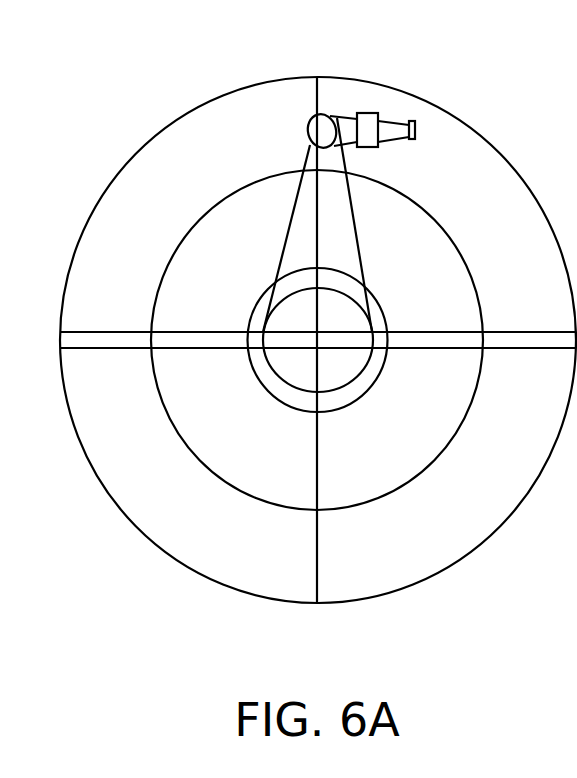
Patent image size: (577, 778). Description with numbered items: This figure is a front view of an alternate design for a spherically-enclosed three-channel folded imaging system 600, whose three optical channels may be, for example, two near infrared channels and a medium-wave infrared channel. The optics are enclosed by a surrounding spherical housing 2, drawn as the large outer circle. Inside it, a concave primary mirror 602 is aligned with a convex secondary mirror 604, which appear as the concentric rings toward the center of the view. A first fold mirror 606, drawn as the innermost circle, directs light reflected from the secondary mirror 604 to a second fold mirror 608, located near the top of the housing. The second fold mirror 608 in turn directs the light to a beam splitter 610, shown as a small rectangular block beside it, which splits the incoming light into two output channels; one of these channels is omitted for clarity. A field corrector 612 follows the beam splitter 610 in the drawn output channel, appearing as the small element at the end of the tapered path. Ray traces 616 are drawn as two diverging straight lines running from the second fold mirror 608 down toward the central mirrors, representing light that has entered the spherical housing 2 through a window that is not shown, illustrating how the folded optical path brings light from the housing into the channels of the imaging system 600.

The spherical housing 2 is at (150, 137).
The spherically-enclosed three-channel folded imaging system 600 is at (284, 672).
The concave primary mirror 602 is at (250, 498).
The convex secondary mirror 604 is at (290, 410).
The first fold mirror 606 is at (338, 392).
The second fold mirror 608 is at (307, 132).
The beam splitter 610 is at (366, 113).
The field corrector 612 is at (416, 129).
The ray traces 616 is at (285, 241).